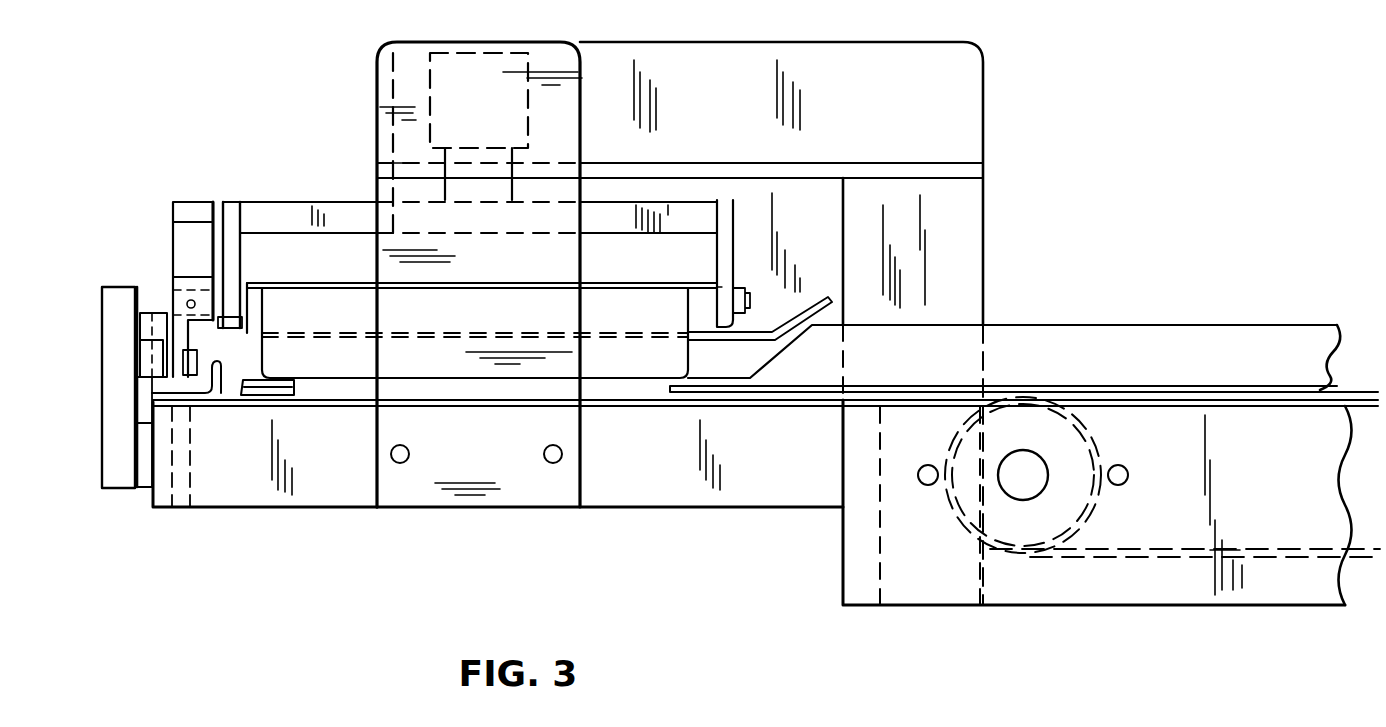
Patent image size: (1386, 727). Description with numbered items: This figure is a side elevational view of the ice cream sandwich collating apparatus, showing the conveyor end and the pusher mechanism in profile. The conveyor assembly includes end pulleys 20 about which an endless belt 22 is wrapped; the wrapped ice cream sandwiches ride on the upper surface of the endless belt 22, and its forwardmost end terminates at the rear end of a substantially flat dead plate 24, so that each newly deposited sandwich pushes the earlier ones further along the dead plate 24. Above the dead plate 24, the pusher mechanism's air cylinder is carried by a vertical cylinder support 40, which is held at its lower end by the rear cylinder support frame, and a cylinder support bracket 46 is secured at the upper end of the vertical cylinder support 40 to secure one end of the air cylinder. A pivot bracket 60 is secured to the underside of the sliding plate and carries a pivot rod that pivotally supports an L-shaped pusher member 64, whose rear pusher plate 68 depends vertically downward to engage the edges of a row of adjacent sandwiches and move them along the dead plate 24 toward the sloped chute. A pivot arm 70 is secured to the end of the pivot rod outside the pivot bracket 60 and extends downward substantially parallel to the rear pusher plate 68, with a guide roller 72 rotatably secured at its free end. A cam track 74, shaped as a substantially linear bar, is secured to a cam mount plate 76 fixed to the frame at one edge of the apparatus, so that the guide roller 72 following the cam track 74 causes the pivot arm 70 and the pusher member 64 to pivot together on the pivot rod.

The end pulleys 20 is at (1028, 543).
The endless belt 22 is at (1142, 555).
The dead plate 24 is at (902, 400).
The vertical cylinder support 40 is at (383, 217).
The cylinder support bracket 46 is at (393, 52).
The pivot bracket 60 is at (307, 180).
The L-shaped pusher member 64 is at (313, 378).
The rear pusher plate 68 is at (357, 370).
The pivot arm 70 is at (173, 230).
The guide roller 72 is at (135, 388).
The cam track 74 is at (147, 313).
The cam mount plate 76 is at (102, 396).